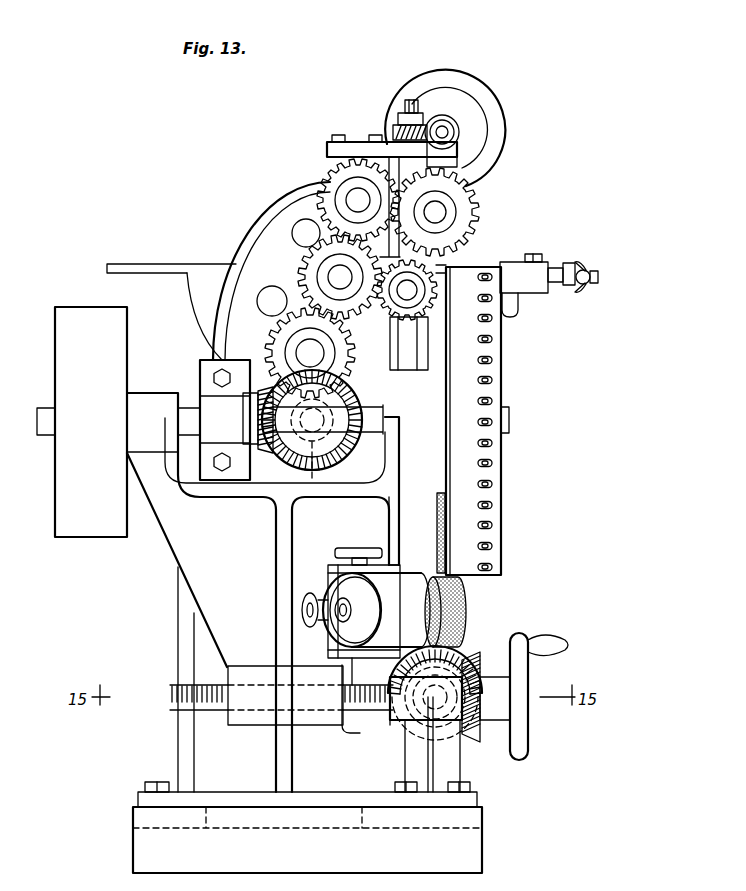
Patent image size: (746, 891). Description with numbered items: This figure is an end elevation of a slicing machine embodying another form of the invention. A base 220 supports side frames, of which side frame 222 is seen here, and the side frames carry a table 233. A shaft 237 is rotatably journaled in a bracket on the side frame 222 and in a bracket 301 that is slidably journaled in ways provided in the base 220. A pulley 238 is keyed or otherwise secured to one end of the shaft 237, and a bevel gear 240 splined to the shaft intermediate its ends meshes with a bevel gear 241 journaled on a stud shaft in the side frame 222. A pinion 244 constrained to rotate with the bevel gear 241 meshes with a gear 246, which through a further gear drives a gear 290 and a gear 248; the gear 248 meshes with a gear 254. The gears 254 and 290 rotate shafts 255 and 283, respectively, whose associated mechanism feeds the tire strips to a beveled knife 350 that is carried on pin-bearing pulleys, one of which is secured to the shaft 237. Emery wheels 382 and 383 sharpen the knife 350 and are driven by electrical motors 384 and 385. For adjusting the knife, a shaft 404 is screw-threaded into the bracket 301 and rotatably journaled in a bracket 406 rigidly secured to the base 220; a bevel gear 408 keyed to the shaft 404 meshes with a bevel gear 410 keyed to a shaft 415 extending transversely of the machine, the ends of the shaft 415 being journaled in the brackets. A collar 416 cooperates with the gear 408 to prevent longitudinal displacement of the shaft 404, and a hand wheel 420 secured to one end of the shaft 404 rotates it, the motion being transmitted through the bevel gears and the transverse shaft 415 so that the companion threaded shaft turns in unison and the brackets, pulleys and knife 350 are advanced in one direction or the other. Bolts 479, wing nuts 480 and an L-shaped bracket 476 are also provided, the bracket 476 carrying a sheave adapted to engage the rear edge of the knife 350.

The base 220 is at (482, 850).
The side frame 222 is at (252, 253).
The table 233 is at (115, 265).
The shaft 237 is at (188, 407).
The pulley 238 is at (117, 353).
The bevel gear 240 is at (262, 416).
The bevel gear 241 is at (303, 274).
The pinion 244 is at (348, 534).
The gear 246 is at (275, 343).
The gear 248 is at (323, 193).
The gear 254 is at (468, 194).
The shaft 255 is at (437, 212).
The shaft 283 is at (410, 285).
The gear 290 is at (388, 318).
The bracket 301 is at (392, 402).
The knife 350 is at (503, 398).
The emery wheel 382 is at (393, 508).
The emery wheel 383 is at (452, 600).
The electrical motor 384 is at (393, 525).
The electrical motor 385 is at (413, 615).
The shaft 404 is at (175, 690).
The bracket 406 is at (412, 754).
The bevel gear 408 is at (480, 737).
The bevel gear 410 is at (450, 660).
The shaft 415 is at (390, 680).
The collar 416 is at (393, 722).
The hand wheel 420 is at (525, 745).
The L-shaped bracket 476 is at (560, 262).
The bolt 479 is at (598, 278).
The wing nut 480 is at (588, 268).